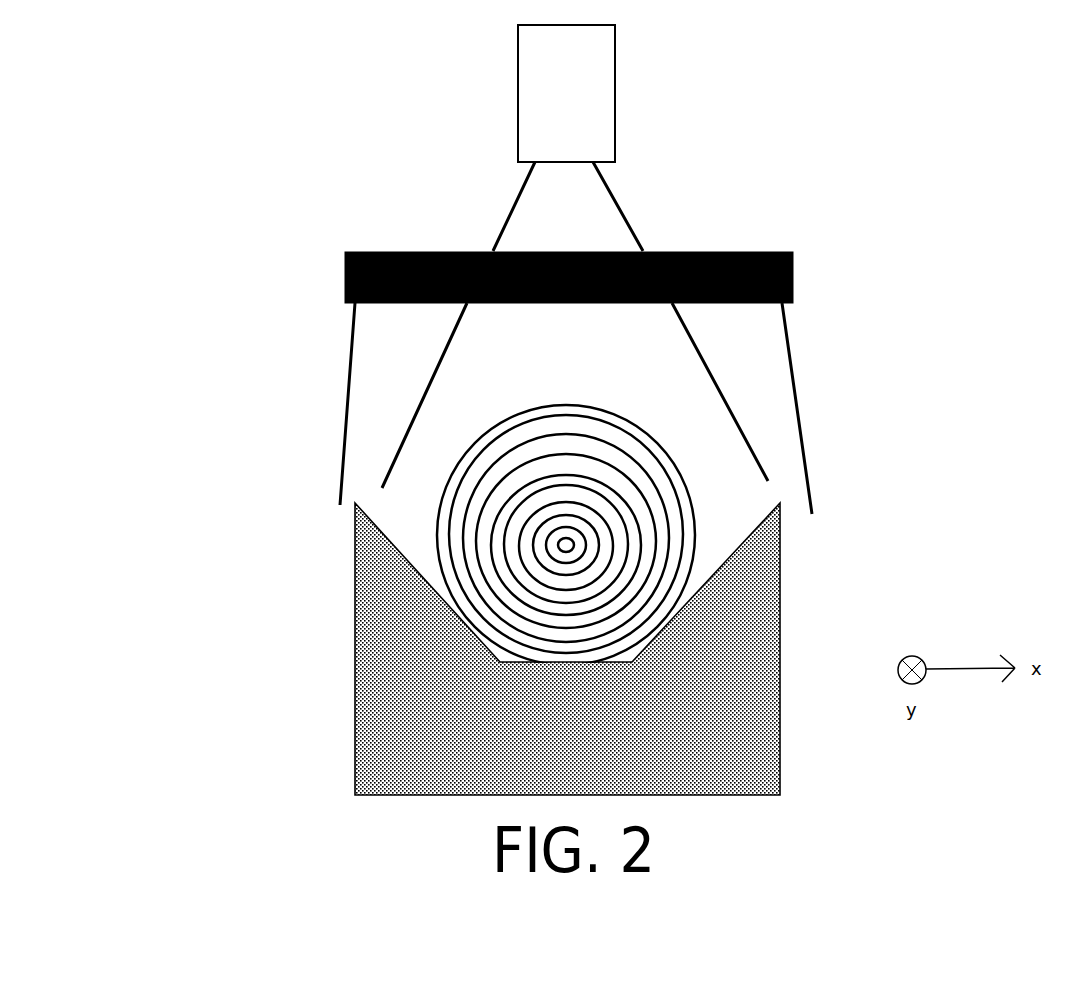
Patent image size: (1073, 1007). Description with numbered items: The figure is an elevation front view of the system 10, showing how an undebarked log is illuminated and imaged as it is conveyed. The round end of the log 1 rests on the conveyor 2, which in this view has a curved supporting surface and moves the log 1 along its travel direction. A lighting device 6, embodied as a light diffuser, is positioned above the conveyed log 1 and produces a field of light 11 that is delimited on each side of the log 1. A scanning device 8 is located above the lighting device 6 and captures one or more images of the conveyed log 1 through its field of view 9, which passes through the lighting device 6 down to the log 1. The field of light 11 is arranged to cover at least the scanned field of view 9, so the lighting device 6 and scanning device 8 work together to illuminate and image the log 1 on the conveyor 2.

The log 1 is at (675, 460).
The conveyor 2 is at (356, 663).
The lighting device 6 is at (730, 250).
The scanning device 8 is at (566, 93).
The field of view 9 is at (457, 342).
The system 10 is at (330, 124).
The field of light 11 is at (348, 408).